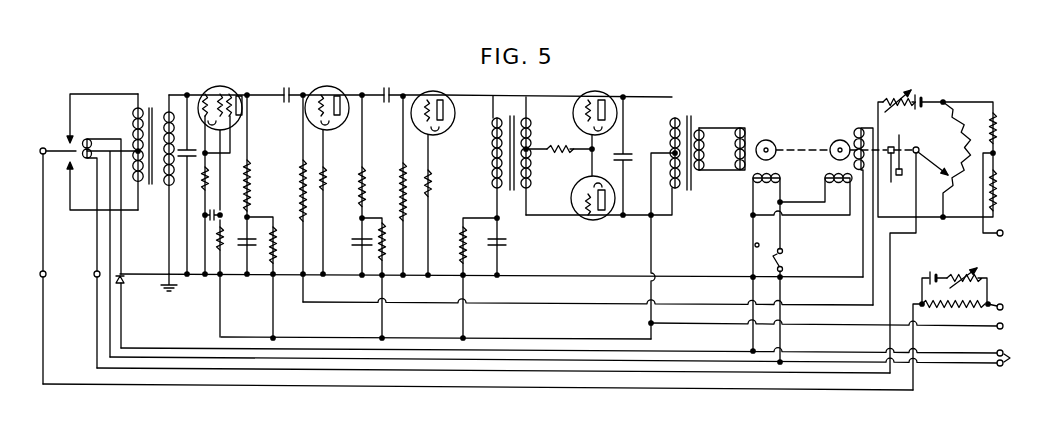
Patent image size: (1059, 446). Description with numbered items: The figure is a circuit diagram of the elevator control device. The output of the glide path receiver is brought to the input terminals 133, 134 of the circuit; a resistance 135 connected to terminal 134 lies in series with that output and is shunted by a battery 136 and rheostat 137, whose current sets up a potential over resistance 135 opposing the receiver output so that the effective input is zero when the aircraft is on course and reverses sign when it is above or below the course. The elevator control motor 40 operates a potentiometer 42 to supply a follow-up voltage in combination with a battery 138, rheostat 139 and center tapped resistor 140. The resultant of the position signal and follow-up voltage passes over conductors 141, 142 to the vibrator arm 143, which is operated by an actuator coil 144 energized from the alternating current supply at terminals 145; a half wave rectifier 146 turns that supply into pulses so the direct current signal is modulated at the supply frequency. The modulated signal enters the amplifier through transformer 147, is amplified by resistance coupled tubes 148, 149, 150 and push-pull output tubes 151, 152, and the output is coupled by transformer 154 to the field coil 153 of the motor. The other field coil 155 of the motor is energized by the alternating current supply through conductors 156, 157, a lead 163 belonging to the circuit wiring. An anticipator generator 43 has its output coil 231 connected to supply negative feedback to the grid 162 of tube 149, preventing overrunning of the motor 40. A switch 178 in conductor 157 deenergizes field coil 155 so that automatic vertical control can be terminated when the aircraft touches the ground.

The elevator control motor 40 is at (766, 143).
The potentiometer 42 is at (928, 157).
The anticipator generator 43 is at (838, 139).
The input terminal 133 is at (998, 237).
The input terminal 134 is at (997, 309).
The resistance 135 is at (951, 300).
The battery 136 is at (938, 272).
The rheostat 137 is at (966, 280).
The battery 138 is at (922, 99).
The rheostat 139 is at (891, 96).
The center tapped resistor 140 is at (997, 123).
The conductor 141 is at (913, 334).
The conductor 142 is at (916, 232).
The vibrator arm 143 is at (63, 137).
The actuator coil 144 is at (103, 136).
The terminals 145 is at (1018, 358).
The half wave rectifier 146 is at (125, 278).
The transformer 147 is at (150, 107).
The resistance coupled tube 148 is at (240, 88).
The resistance coupled tube 149 is at (318, 91).
The resistance coupled tube 150 is at (431, 92).
The push-pull output tube 151 is at (582, 95).
The push-pull output tube 152 is at (592, 221).
The field coil 153 is at (742, 128).
The transformer 154 is at (689, 112).
The field coil 155 is at (762, 184).
The conductor 156 is at (753, 231).
The conductor 157 is at (780, 231).
The grid 162 is at (297, 84).
The lead 163 is at (323, 300).
The switch 178 is at (783, 253).
The output coil 231 is at (856, 128).